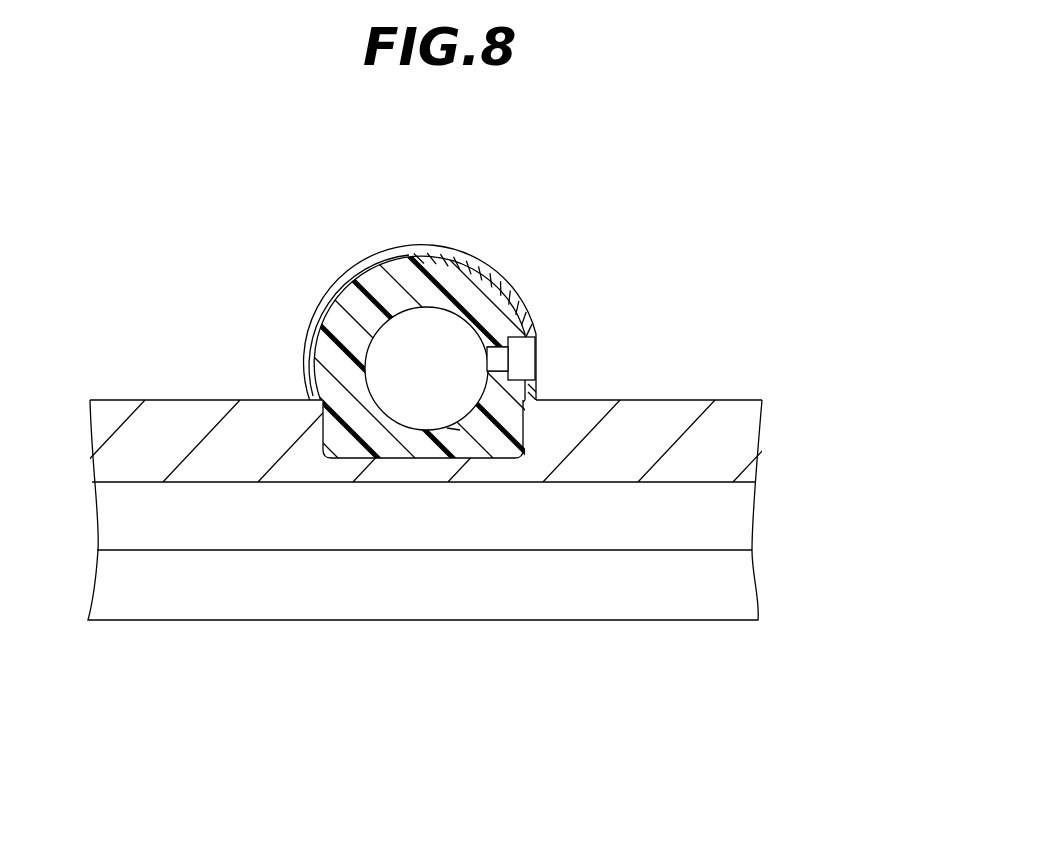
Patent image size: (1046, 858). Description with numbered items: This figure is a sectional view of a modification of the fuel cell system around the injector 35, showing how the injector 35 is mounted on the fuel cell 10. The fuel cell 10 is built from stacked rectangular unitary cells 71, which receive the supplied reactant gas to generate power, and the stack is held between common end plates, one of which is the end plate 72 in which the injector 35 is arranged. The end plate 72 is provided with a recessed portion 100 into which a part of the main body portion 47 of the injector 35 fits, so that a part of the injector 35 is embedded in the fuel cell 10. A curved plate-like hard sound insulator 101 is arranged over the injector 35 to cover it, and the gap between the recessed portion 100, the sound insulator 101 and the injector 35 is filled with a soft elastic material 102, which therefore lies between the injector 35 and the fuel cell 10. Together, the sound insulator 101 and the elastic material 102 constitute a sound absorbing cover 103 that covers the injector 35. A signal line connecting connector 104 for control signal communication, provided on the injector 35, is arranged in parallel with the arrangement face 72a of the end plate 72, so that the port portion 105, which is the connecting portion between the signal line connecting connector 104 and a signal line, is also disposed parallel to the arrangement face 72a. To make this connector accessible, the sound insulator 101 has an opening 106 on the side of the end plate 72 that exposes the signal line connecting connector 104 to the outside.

The fuel cell 10 is at (477, 403).
The injector 35 is at (427, 305).
The main body portion 47 is at (455, 430).
The unitary cell 71 is at (740, 521).
The end plate 72 is at (439, 389).
The arrangement face 72a is at (138, 400).
The recessed portion 100 is at (429, 403).
The sound insulator 101 is at (361, 385).
The elastic material 102 is at (341, 372).
The sound absorbing cover 103 is at (319, 316).
The signal line connecting connector 104 is at (582, 337).
The port portion 105 is at (537, 360).
The opening 106 is at (536, 333).